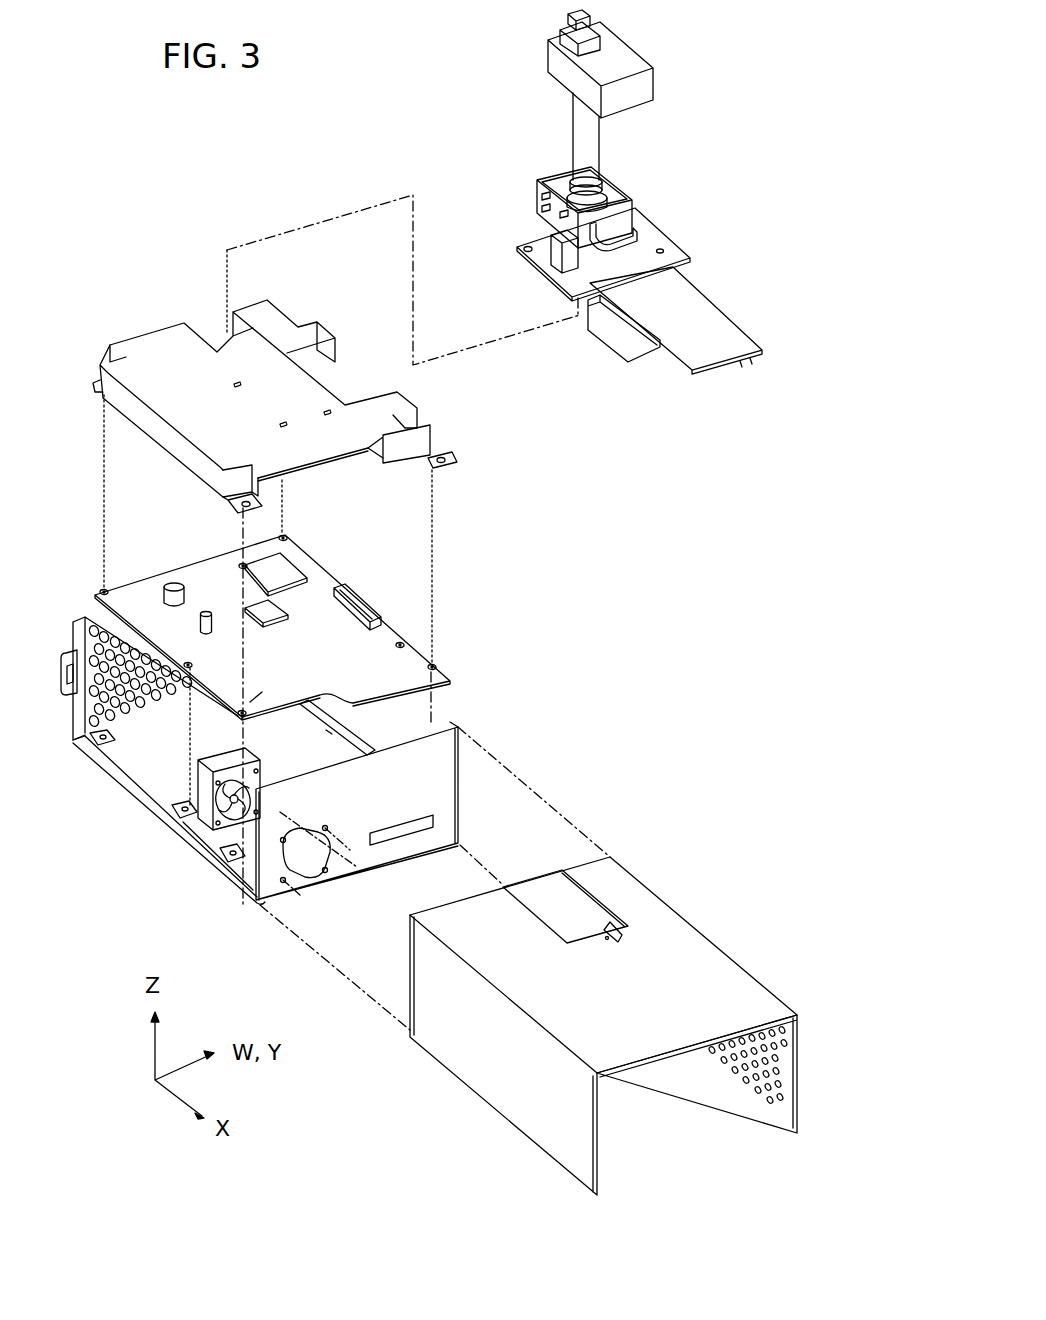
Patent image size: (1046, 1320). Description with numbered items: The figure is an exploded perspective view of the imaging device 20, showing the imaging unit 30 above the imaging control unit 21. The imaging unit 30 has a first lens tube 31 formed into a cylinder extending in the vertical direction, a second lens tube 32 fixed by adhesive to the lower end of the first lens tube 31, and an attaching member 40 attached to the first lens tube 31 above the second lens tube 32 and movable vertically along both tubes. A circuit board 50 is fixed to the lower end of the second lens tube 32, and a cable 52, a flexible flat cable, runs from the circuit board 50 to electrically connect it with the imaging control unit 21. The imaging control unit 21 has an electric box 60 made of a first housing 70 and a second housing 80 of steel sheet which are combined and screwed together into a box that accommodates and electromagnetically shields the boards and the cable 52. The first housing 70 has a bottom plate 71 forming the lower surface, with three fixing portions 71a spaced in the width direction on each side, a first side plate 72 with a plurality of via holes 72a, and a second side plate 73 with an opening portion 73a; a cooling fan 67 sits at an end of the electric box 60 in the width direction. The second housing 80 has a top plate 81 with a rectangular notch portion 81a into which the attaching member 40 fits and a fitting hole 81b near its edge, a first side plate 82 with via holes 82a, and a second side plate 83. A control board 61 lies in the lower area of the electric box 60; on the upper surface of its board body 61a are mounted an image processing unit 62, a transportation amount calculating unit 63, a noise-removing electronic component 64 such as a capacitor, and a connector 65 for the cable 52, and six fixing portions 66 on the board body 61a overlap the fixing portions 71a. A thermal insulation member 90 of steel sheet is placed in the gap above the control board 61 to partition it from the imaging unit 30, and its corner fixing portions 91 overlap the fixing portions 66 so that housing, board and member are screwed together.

The imaging device 20 is at (100, 170).
The imaging control unit 21 is at (78, 266).
The imaging unit 30 is at (500, 72).
The first lens tube 31 is at (572, 142).
The second lens tube 32 is at (553, 259).
The attaching member 40 is at (633, 184).
The circuit board 50 is at (667, 238).
The cable 52 is at (730, 318).
The electric box 60 is at (602, 712).
The control board 61 is at (319, 702).
The board body 61a is at (262, 699).
The image processing unit 62 is at (290, 572).
The transportation amount calculating unit 63 is at (272, 613).
The electronic component 64 is at (209, 613).
The connector 65 is at (368, 632).
The fixing portions 66 is at (285, 537).
The cooling fan 67 is at (263, 765).
The first housing 70 is at (300, 747).
The bottom plate 71 is at (148, 780).
The fixing portions 71a is at (100, 745).
The first side plate 72 is at (145, 667).
The via holes 72a is at (158, 703).
The second side plate 73 is at (380, 823).
The opening portion 73a is at (310, 880).
The second housing 80 is at (528, 933).
The top plate 81 is at (603, 961).
The notch portion 81a is at (520, 893).
The fitting hole 81b is at (618, 942).
The first side plate 82 is at (697, 1078).
The via holes 82a is at (760, 1102).
The second side plate 83 is at (495, 1108).
The thermal insulation member 90 is at (165, 313).
The fixing portions 91 is at (94, 384).